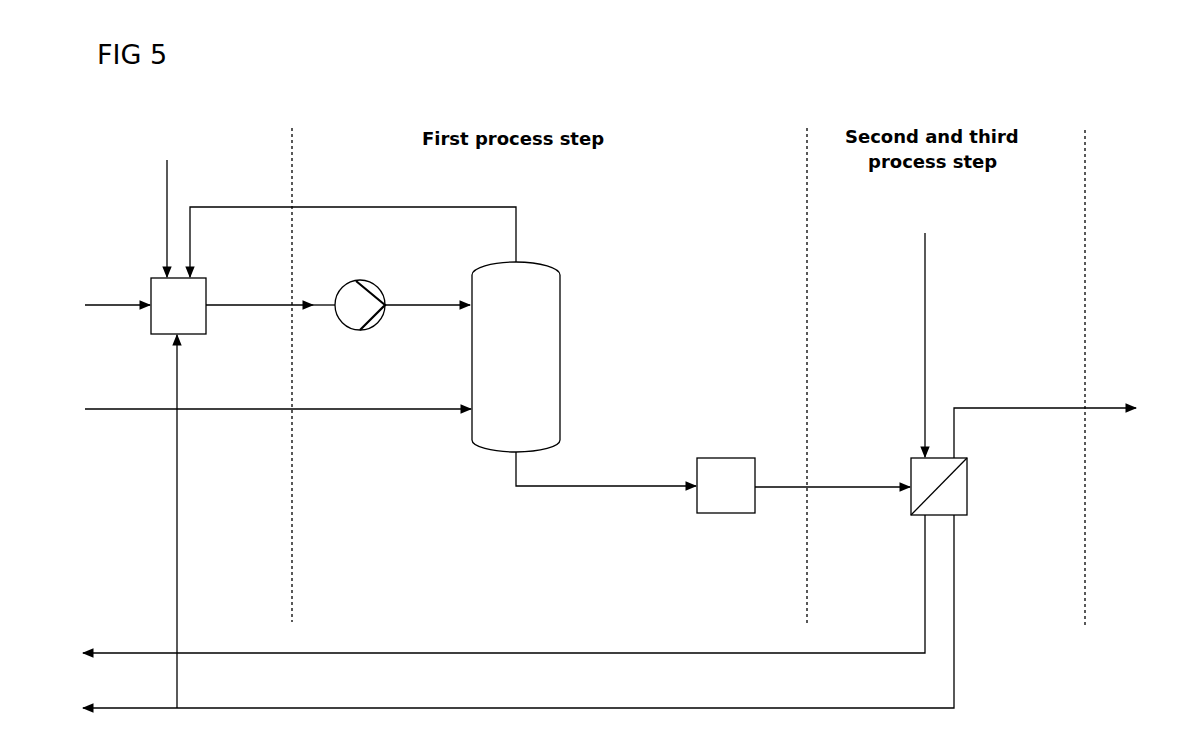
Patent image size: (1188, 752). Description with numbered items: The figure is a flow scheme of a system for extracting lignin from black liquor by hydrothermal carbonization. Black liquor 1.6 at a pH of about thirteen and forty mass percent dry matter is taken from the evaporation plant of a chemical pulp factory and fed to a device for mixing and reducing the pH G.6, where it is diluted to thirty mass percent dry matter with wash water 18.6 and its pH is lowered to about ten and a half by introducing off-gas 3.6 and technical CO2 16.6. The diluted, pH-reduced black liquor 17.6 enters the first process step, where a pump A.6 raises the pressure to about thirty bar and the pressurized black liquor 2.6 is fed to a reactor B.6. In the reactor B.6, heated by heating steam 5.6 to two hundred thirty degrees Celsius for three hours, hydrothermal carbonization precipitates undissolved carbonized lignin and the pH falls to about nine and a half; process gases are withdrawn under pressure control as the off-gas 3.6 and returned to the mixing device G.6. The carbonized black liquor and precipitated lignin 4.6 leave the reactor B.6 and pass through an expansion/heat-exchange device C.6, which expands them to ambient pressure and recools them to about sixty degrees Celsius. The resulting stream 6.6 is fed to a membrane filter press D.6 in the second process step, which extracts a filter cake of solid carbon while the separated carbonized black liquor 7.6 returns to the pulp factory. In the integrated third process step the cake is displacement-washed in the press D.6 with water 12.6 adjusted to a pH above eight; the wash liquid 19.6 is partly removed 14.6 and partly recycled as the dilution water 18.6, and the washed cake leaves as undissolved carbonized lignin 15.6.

The device for mixing and reducing the pH G.6 is at (178, 306).
The pump A.6 is at (360, 292).
The reactor B.6 is at (516, 357).
The expansion/heat-exchange device C.6 is at (726, 485).
The membrane filter press D.6 is at (939, 486).
The black liquor 1.6 is at (101, 306).
The black liquor 2.6 is at (427, 294).
The off-gas 3.6 is at (353, 230).
The carbonized black liquor and undissolved carbonized lignin 4.6 is at (606, 469).
The heating steam 5.6 is at (261, 410).
The carbonized black liquor and undissolved carbonized lignin 6.6 is at (832, 475).
The carbonized black liquor 7.6 is at (485, 589).
The water 12.6 is at (926, 335).
The removed wash liquid 14.6 is at (289, 709).
The undissolved carbonized lignin 15.6 is at (1066, 429).
The technical CO2 16.6 is at (166, 206).
The black liquor 17.6 is at (270, 294).
The wash water 18.6 is at (199, 521).
The wash liquid 19.6 is at (745, 611).